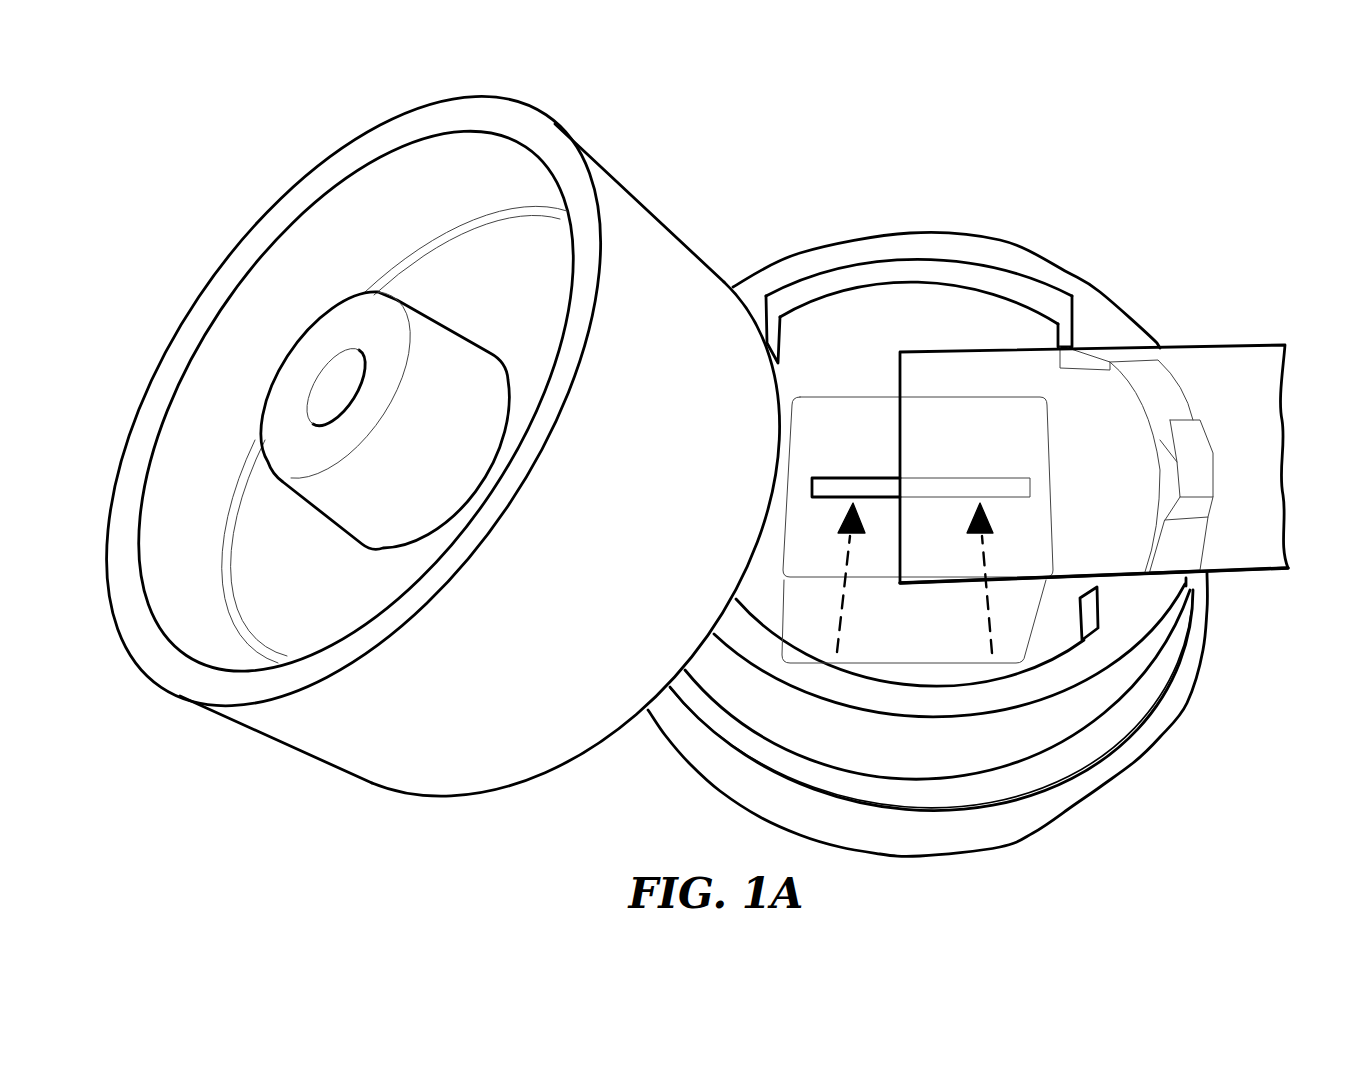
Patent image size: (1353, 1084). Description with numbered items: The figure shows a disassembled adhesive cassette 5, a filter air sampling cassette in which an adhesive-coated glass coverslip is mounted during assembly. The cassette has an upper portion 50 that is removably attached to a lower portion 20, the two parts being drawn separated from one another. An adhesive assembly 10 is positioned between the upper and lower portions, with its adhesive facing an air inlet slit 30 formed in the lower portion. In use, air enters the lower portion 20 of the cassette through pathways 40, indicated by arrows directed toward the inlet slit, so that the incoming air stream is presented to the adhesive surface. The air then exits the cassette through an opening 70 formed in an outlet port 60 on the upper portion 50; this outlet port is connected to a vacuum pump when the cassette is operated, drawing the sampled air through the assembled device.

The adhesive cassette 5 is at (831, 115).
The adhesive assembly 10 is at (1245, 392).
The lower portion 20 is at (1015, 250).
The air inlet slit 30 is at (867, 490).
The pathways 40 is at (847, 594).
The upper portion 50 is at (638, 255).
The outlet port 60 is at (333, 330).
The opening 70 is at (336, 393).